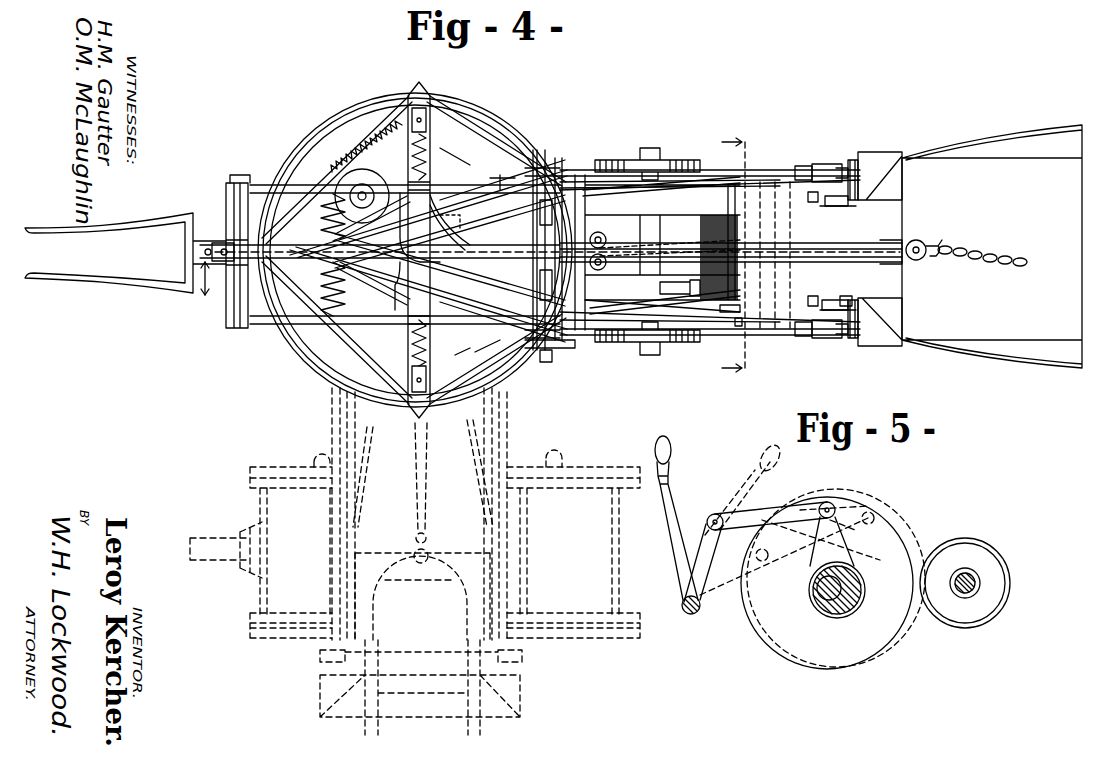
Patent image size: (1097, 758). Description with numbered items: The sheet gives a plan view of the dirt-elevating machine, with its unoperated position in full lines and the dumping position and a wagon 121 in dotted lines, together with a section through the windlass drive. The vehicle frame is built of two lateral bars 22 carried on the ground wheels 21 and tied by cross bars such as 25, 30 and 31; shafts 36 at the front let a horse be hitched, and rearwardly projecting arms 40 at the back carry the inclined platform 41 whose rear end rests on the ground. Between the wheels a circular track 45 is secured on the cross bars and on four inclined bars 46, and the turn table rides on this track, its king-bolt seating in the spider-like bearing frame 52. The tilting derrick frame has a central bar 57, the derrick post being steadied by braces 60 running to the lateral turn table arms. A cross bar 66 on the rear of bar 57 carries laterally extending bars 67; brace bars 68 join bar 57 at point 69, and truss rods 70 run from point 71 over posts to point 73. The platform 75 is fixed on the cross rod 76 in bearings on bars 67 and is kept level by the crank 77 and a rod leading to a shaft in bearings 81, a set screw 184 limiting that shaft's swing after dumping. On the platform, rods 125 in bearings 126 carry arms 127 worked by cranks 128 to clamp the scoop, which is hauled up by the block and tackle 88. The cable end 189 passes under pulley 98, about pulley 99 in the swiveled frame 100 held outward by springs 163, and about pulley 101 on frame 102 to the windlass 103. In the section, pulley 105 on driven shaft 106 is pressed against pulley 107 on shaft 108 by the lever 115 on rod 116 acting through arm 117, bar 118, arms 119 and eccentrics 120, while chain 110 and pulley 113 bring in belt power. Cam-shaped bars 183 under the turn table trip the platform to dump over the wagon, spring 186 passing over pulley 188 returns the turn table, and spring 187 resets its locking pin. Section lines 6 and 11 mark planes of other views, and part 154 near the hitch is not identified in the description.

In FIG. 4, the hitch coupling 6 is at (217, 252).
In FIG. 4, the section line 11 is at (756, 255).
In FIG. 4, the ground wheels 21 is at (620, 160).
In FIG. 4, the lateral beams or bars 22 is at (462, 186).
In FIG. 4, the cross bar 25 is at (764, 232).
In FIG. 4, the cross bar 30 is at (248, 180).
In FIG. 4, the cross bar 31 is at (226, 213).
In FIG. 4, the shafts 36 is at (152, 211).
In FIG. 4, the rearwardly projecting arms 40 is at (452, 219).
In FIG. 4, the inclined platform 41 is at (992, 246).
In FIG. 4, the circular track or rail 45 is at (307, 140).
In FIG. 4, the inclined bars 46 is at (276, 172).
In FIG. 4, the spider-like bearing frame 52 is at (402, 280).
In FIG. 4, the central bar of tilting frame 57 is at (476, 257).
In FIG. 4, the braces 60 is at (478, 218).
In FIG. 4, the cross bar 66 is at (580, 306).
In FIG. 4, the laterally extending bars 67 is at (770, 180).
In FIG. 4, the brace bars 68 is at (644, 314).
In FIG. 4, the connection point 69 is at (432, 240).
In FIG. 4, the truss rods 70 is at (710, 176).
In FIG. 4, the point 71 is at (368, 250).
In FIG. 4, the point 73 is at (800, 168).
In FIG. 4, the platform 75 is at (888, 158).
In FIG. 4, the cross rod 76 is at (836, 230).
In FIG. 4, the crank 77 is at (826, 166).
In FIG. 4, the bearings 81 is at (548, 176).
In FIG. 4, the block and tackle 88 is at (918, 240).
In FIG. 4, the pulley 98 is at (888, 244).
In FIG. 4, the pulley 99 is at (428, 118).
In FIG. 4, the swiveled frame 100 is at (412, 122).
In FIG. 4, the pulley 101 is at (657, 252).
In FIG. 4, the frame 102 is at (618, 252).
In FIG. 4, the windlass 103 is at (700, 228).
In FIG. 4, the pulley 105 is at (726, 306).
In FIG. 5, the pulley 105 is at (890, 626).
In FIG. 5, the driven shaft 106 is at (814, 594).
In FIG. 4, the pulley 107 is at (672, 282).
In FIG. 5, the pulley 107 is at (938, 612).
In FIG. 5, the shaft 108 is at (980, 578).
In FIG. 4, the chain 110 is at (556, 336).
In FIG. 4, the pulley 113 is at (552, 364).
In FIG. 4, the lever 115 is at (740, 330).
In FIG. 5, the lever 115 is at (672, 508).
In FIG. 5, the rod 116 is at (694, 614).
In FIG. 5, the arm 117 is at (706, 556).
In FIG. 5, the bar 118 is at (770, 508).
In FIG. 5, the arms 119 is at (840, 520).
In FIG. 5, the eccentrics 120 is at (860, 590).
In FIG. 4, the wagon 121 is at (262, 524).
In FIG. 4, the rod 125 is at (840, 204).
In FIG. 4, the bearings 126 is at (808, 198).
In FIG. 4, the arms 127 is at (853, 162).
In FIG. 4, the cranks 128 is at (826, 204).
In FIG. 4, the pin 154 is at (222, 288).
In FIG. 4, the springs 163 is at (427, 146).
In FIG. 4, the cam-shaped bar 183 is at (498, 176).
In FIG. 4, the set screw 184 is at (492, 154).
In FIG. 4, the spring 186 is at (360, 170).
In FIG. 4, the spring 187 is at (322, 208).
In FIG. 4, the pulley 188 is at (325, 232).
In FIG. 4, the cable end 189 is at (670, 247).